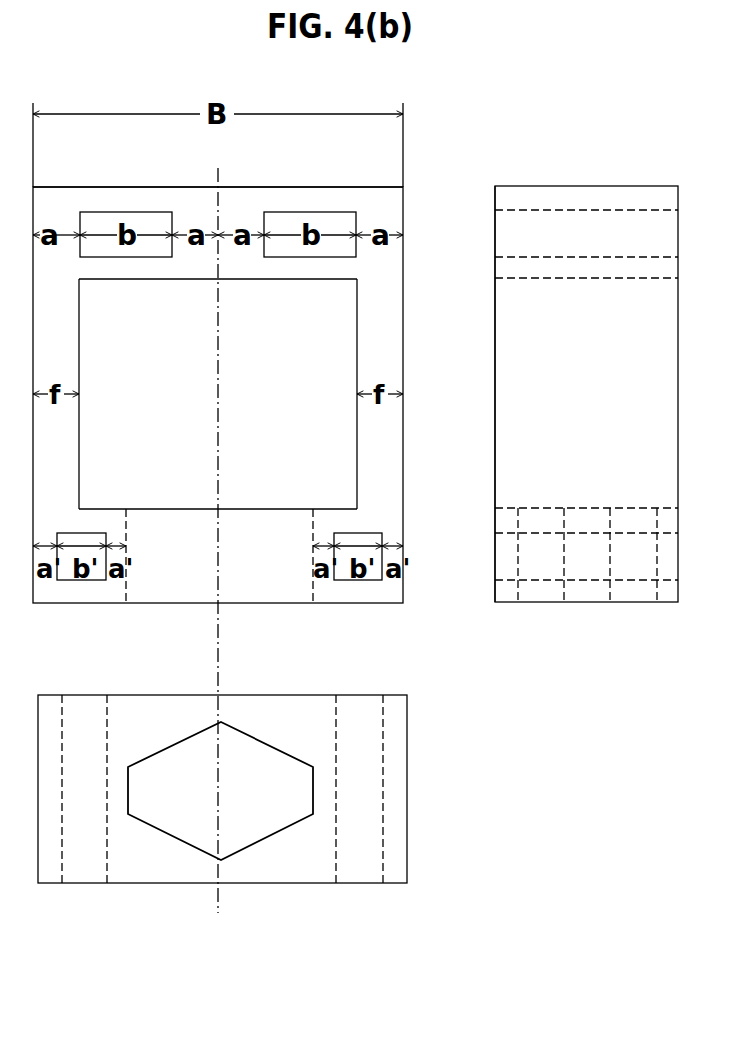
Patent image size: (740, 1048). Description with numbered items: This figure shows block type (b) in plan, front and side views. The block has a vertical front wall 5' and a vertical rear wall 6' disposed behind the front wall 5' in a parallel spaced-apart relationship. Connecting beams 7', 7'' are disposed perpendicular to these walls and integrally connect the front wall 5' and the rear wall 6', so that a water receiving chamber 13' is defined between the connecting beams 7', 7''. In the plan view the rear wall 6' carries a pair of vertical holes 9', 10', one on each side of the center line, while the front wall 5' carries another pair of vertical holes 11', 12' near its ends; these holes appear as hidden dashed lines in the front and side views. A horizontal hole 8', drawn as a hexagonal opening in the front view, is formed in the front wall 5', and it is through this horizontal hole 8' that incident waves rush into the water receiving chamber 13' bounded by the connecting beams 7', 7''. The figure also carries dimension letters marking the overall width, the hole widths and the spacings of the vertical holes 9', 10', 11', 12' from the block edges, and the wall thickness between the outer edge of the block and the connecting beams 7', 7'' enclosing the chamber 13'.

The vertical front wall 5' is at (355, 534).
The vertical rear wall 6' is at (355, 217).
The connecting beam 7' is at (287, 394).
The connecting beam 7'' is at (396, 394).
The horizontal hole 8' is at (220, 828).
The vertical hole 9' is at (379, 204).
The vertical hole 10' is at (384, 204).
The vertical hole 11' is at (367, 695).
The vertical hole 12' is at (506, 695).
The central chamber 13' is at (218, 394).